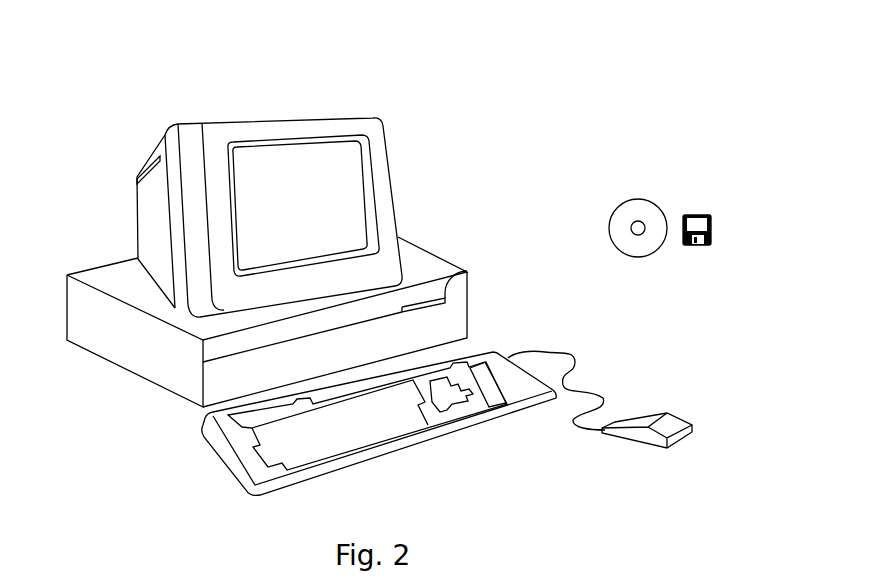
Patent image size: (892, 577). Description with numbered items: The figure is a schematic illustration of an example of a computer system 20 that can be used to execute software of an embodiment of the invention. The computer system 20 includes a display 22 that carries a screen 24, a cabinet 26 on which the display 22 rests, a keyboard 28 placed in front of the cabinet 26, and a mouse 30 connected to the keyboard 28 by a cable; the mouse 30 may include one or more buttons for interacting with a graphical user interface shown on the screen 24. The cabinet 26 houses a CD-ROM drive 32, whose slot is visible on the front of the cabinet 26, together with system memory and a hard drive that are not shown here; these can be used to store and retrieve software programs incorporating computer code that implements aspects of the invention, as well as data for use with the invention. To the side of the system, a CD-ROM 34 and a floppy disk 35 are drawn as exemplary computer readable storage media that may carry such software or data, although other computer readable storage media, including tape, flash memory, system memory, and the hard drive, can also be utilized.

The computer system 20 is at (571, 92).
The display 22 is at (398, 214).
The screen 24 is at (372, 158).
The cabinet 26 is at (170, 392).
The keyboard 28 is at (383, 458).
The mouse 30 is at (683, 411).
The CD-ROM drive 32 is at (466, 276).
The CD-ROM 34 is at (638, 195).
The floppy disk 35 is at (702, 208).